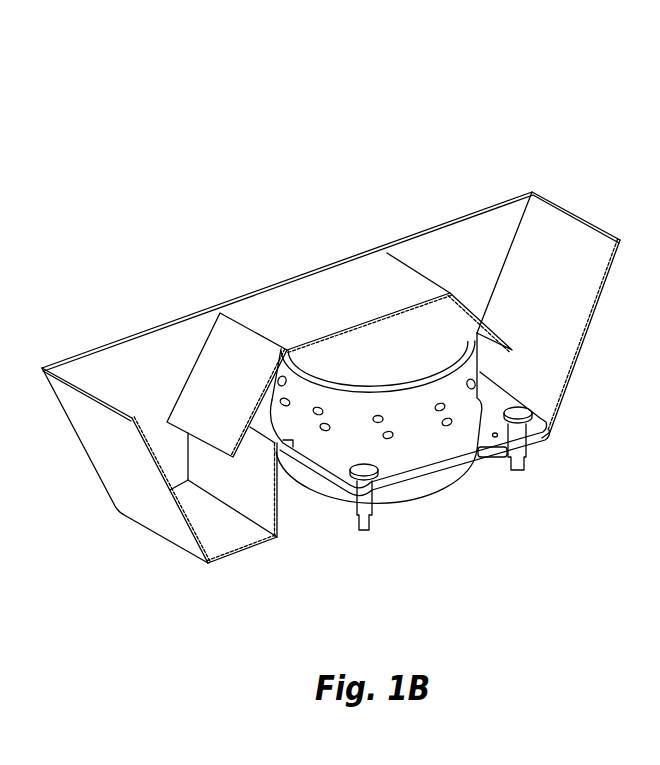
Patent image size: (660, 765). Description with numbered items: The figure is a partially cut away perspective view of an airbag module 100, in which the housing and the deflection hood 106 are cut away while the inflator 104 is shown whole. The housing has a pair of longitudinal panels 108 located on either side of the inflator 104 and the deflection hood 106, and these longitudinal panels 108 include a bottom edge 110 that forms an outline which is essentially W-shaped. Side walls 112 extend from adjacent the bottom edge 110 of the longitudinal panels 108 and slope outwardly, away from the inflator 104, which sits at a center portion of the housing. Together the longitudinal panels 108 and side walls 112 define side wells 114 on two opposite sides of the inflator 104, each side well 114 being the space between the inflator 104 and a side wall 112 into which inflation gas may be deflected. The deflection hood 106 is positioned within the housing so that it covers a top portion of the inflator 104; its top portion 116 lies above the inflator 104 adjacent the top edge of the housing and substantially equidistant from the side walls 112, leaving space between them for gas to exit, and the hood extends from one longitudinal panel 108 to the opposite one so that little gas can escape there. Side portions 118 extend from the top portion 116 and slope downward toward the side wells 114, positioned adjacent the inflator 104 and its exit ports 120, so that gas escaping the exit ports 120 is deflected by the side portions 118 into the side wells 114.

The airbag module 100 is at (443, 157).
The inflator 104 is at (436, 513).
The deflection hood 106 is at (292, 308).
The longitudinal panel 108 is at (133, 368).
The bottom edge 110 is at (247, 553).
The side wall 112 is at (563, 240).
The side well 114 is at (206, 519).
The top portion 116 is at (367, 277).
The side portion 118 is at (210, 373).
The exit port 120 is at (323, 431).